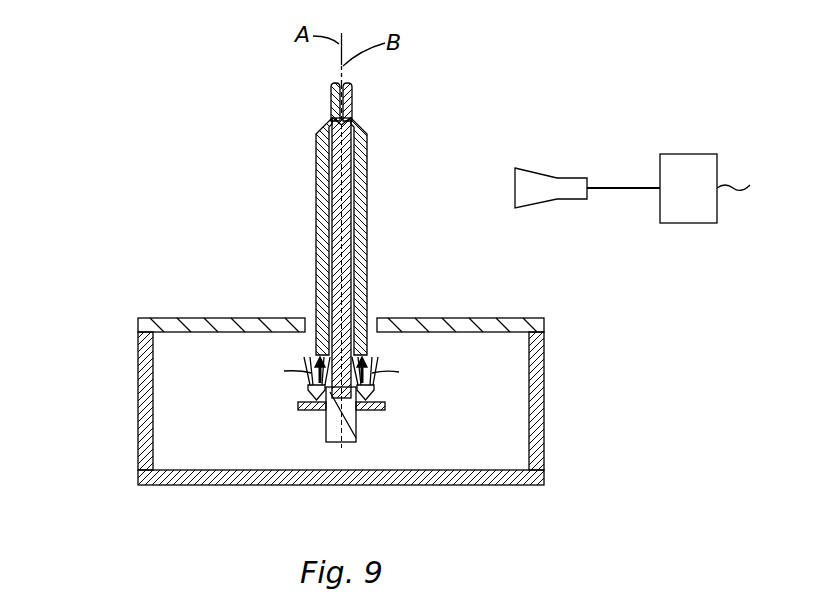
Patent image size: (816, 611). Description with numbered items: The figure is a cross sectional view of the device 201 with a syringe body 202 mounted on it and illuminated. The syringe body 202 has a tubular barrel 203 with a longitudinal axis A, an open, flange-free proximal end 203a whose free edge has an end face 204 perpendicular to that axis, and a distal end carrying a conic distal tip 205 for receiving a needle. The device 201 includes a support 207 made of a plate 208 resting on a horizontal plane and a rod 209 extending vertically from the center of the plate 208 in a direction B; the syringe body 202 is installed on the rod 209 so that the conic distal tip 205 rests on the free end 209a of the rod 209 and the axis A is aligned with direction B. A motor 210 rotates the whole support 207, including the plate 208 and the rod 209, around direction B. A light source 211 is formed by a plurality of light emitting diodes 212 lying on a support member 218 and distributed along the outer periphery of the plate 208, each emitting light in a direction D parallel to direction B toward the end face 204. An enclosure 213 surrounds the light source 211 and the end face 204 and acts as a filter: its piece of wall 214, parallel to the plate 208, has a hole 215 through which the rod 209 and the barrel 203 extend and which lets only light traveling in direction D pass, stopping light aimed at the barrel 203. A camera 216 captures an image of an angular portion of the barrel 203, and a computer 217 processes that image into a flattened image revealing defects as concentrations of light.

The device 201 is at (360, 369).
The syringe body 202 is at (386, 257).
The tubular barrel 203 is at (323, 188).
The proximal end 203a is at (373, 375).
The end face 204 is at (309, 368).
The conic distal tip 205 is at (349, 107).
The support 207 is at (452, 178).
The plate 208 is at (332, 392).
The rod 209 is at (343, 257).
The free end of the rod 209a is at (344, 122).
The motor 210 is at (356, 434).
The light source 211 is at (390, 394).
The light emitting diodes 212 is at (312, 395).
The enclosure 213 is at (522, 312).
The piece of wall 214 is at (175, 318).
The hole 215 is at (371, 327).
The camera 216 is at (550, 176).
The computer 217 is at (692, 154).
The support member 218 is at (387, 408).